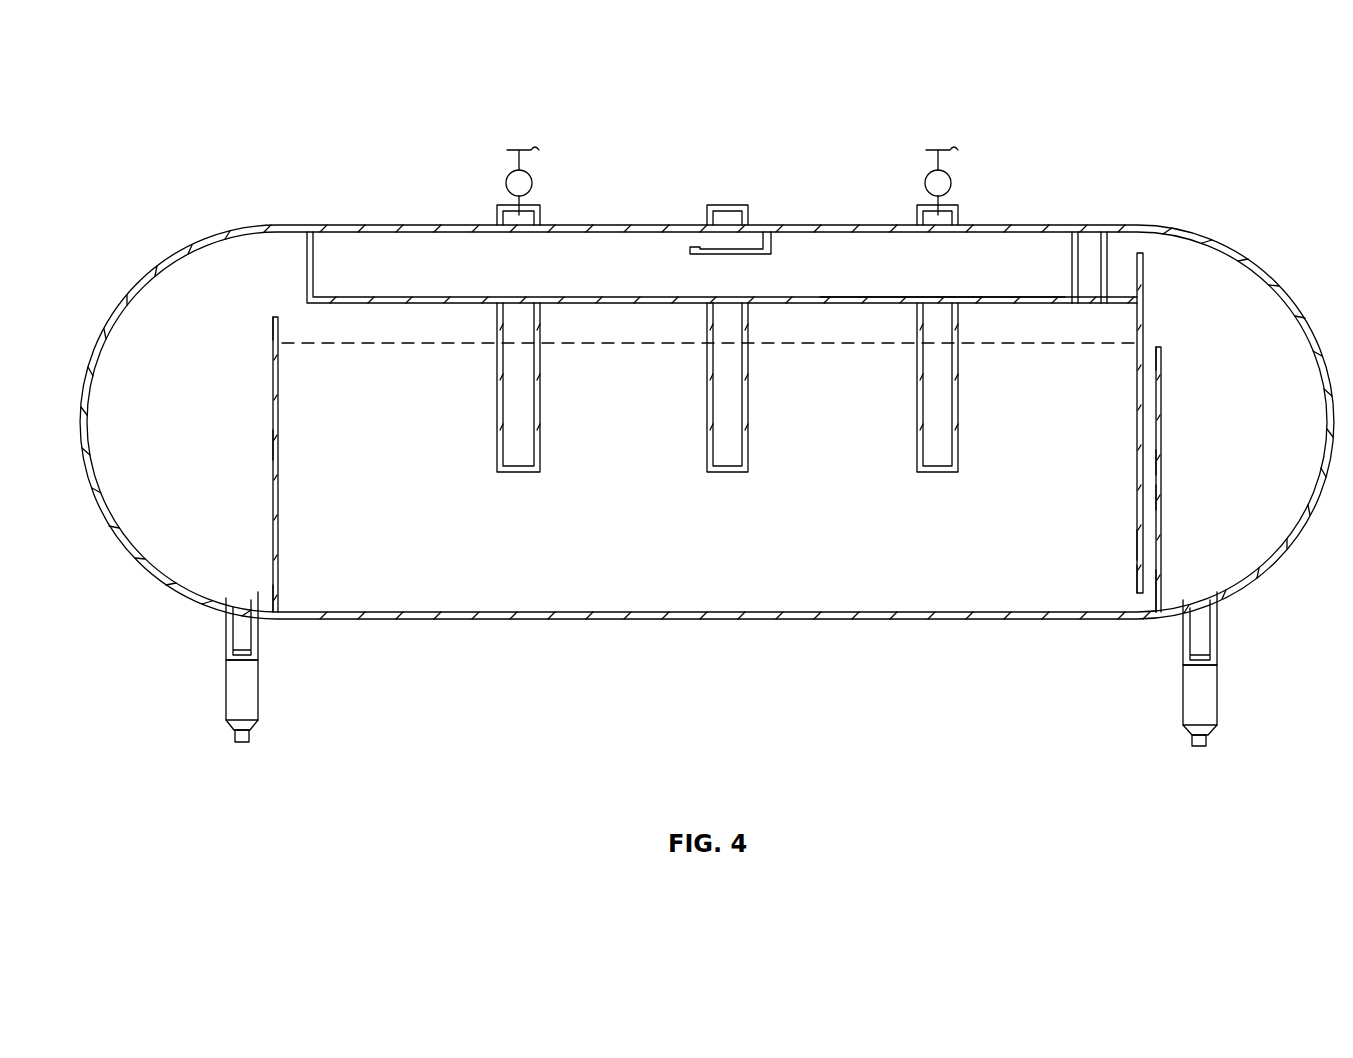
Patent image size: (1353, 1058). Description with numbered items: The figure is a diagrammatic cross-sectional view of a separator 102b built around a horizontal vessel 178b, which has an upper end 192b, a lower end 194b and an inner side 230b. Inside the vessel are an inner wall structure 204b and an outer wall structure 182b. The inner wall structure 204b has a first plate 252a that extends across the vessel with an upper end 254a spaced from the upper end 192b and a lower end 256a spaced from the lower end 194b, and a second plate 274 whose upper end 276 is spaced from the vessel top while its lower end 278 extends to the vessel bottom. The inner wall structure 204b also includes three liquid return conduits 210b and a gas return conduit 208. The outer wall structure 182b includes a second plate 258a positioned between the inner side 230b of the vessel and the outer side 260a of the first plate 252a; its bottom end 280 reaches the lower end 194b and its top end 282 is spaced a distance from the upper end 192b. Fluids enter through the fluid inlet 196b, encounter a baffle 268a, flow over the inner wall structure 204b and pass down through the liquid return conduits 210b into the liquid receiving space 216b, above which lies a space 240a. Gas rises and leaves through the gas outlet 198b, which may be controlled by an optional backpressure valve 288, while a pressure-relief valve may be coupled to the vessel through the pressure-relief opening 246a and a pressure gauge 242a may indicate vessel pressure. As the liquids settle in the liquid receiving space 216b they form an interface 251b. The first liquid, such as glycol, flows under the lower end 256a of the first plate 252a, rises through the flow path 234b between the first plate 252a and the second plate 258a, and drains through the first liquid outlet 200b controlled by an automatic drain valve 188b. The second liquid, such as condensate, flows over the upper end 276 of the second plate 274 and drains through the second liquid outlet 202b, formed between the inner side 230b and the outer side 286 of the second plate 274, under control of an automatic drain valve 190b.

The separator 102b is at (222, 128).
The horizontal vessel 178b is at (228, 222).
The inner side of the horizontal vessel 230b is at (88, 408).
The liquid receiving space 216b is at (800, 548).
The lower end of the horizontal vessel 194b is at (935, 612).
The upper end of the horizontal vessel 192b is at (1120, 237).
The space above the inner wall structure 240a is at (405, 262).
The first plate 252a is at (607, 297).
The inner wall structure 204b is at (853, 300).
The pressure-relief opening 246a is at (520, 205).
The inlet valve 242a is at (505, 178).
The fluid inlet 196b is at (730, 210).
The baffle 268a is at (700, 248).
The gas outlet 198b is at (945, 210).
The backpressure valve 288 is at (925, 180).
The liquid return conduits 210b is at (543, 426).
The interface 251b is at (425, 346).
The gas return conduit 208 is at (1075, 270).
The second plate 274 is at (281, 480).
The upper end of the second plate 276 is at (280, 333).
The outer side of the second plate 286 is at (271, 447).
The lower end of the second plate 278 is at (281, 595).
The upper end of the first plate 254a is at (1143, 285).
The flow path 234b is at (1143, 545).
The lower end of the first plate 256a is at (1138, 567).
The outer side of the first plate 260a is at (1163, 408).
The top end of the second plate of the outer wall structure 282 is at (1163, 365).
The outer wall structure 182b is at (1163, 464).
The second plate of the outer wall structure 258a is at (1163, 500).
The bottom end of the second plate of the outer wall structure 280 is at (1163, 580).
The second liquid outlet 202b is at (228, 630).
The automatic drain valve 190b is at (228, 693).
The first liquid outlet 200b is at (1218, 625).
The automatic drain valve 188b is at (1218, 700).